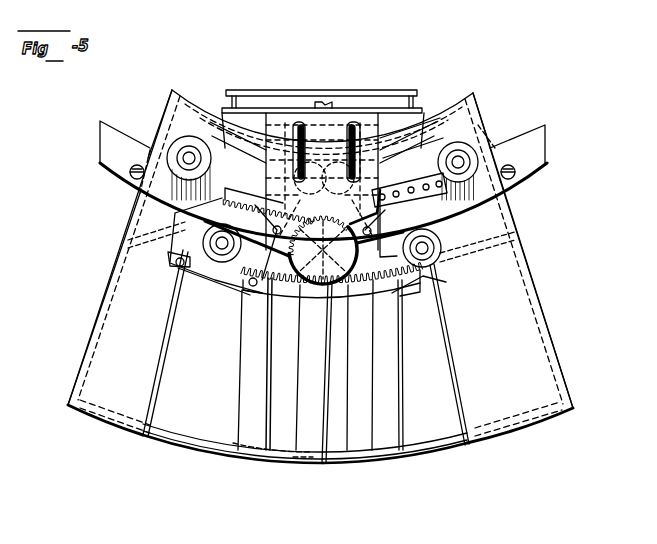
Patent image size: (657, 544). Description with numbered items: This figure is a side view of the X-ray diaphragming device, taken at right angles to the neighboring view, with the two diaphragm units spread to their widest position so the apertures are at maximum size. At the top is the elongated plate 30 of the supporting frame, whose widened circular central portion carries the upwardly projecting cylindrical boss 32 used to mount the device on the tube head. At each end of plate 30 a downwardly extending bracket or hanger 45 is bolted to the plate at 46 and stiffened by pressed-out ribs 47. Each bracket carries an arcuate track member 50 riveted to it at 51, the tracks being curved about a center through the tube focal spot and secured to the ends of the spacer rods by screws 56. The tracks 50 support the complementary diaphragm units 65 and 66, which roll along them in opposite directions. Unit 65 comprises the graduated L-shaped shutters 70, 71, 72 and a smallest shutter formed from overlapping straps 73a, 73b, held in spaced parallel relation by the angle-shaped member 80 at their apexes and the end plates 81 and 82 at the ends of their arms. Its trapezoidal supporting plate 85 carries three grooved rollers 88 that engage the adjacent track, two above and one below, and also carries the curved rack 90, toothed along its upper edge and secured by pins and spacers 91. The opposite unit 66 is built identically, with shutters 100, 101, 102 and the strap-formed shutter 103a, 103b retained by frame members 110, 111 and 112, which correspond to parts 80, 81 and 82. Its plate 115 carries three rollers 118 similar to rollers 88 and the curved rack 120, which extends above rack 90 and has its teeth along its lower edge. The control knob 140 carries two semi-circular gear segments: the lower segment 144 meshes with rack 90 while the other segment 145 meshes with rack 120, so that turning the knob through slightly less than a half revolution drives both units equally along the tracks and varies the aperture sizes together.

The elongated plate 30 is at (233, 90).
The cylindrical boss 32 is at (362, 100).
The bracket or hanger 45 is at (336, 125).
The bolt 46 is at (320, 102).
The stiffening ribs 47 is at (356, 150).
The track member 50 is at (105, 142).
The rivet 51 is at (356, 276).
The screws 56 is at (128, 175).
The diaphragm unit 65 is at (556, 315).
The diaphragm unit 66 is at (91, 303).
The shutter 70 is at (452, 100).
The shutter 71 is at (486, 134).
The shutter 72 is at (520, 244).
The strap 73a is at (463, 447).
The strap 73b is at (433, 442).
The angle-shaped member 80 is at (556, 358).
The strap or plate 81 is at (342, 438).
The strap or plate 82 is at (240, 437).
The supporting plate 85 is at (178, 222).
The grooved rollers 88 is at (188, 150).
The curved rack 90 is at (404, 288).
The pins and spacers 91 is at (172, 276).
The shutter 100 is at (202, 104).
The shutter 101 is at (150, 160).
The shutter 102 is at (128, 242).
The strap 103a is at (172, 441).
The strap 103b is at (184, 435).
The frame member 110 is at (95, 345).
The frame member 111 is at (310, 448).
The frame member 112 is at (390, 438).
The plate 115 is at (428, 165).
The rollers 118 is at (462, 150).
The curved rack 120 is at (448, 214).
The control knob 140 is at (340, 290).
The gear segment 144 is at (252, 281).
The gear segment 145 is at (310, 294).